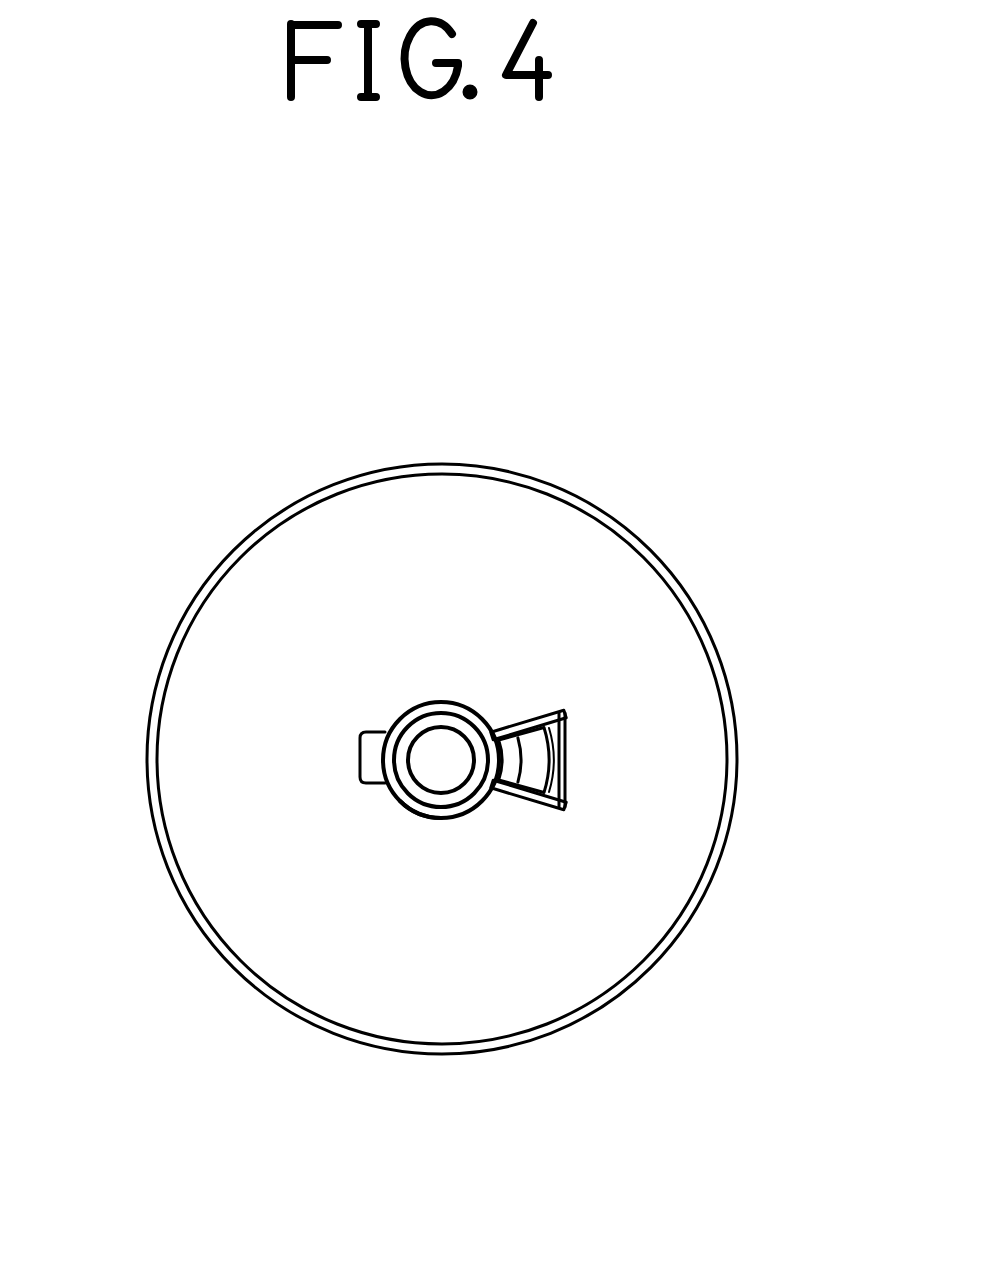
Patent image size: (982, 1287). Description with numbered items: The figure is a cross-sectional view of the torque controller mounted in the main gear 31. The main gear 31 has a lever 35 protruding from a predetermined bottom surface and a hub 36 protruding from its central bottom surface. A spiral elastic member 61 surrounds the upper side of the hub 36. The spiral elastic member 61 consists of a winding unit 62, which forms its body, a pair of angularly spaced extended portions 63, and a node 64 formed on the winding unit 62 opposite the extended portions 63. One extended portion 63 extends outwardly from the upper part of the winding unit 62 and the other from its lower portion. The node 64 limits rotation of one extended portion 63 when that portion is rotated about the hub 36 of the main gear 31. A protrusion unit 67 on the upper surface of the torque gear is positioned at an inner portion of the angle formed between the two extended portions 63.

The main gear 31 is at (490, 1007).
The spiral elastic member 61 is at (403, 716).
The winding unit 62 is at (440, 702).
The extended portions 63 is at (560, 707).
The lever 35 is at (568, 752).
The protrusion unit 67 is at (513, 768).
The node 64 is at (360, 767).
The hub 36 is at (403, 790).